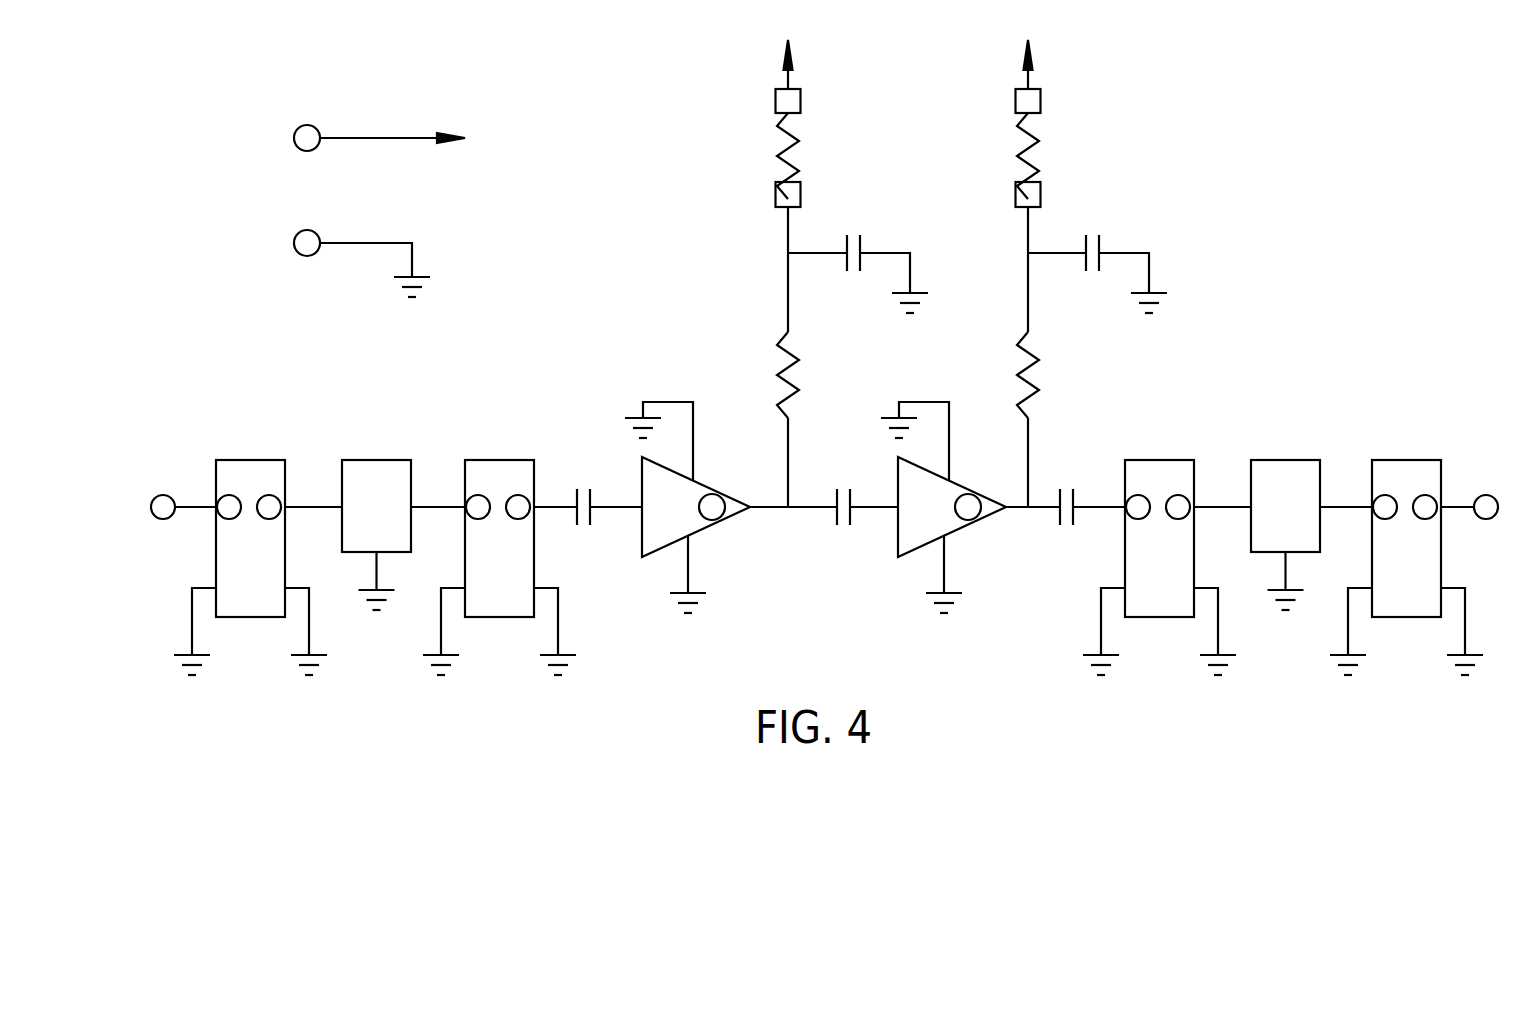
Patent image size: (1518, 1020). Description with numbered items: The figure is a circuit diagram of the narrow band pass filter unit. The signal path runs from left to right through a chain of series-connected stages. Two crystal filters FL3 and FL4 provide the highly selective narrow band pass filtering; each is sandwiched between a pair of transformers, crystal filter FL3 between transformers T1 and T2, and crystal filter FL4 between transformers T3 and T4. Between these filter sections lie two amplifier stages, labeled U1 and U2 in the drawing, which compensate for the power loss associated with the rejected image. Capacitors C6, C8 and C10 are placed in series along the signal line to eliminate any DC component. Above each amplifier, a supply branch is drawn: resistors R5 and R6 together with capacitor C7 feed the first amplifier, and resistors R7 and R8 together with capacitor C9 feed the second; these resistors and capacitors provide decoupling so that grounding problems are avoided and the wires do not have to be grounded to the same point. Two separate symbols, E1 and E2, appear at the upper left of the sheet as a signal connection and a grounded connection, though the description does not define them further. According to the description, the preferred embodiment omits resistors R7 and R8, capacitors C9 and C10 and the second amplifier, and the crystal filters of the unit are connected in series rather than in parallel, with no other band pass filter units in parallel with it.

The signal input port E1 is at (379, 120).
The ground port E2 is at (362, 244).
The transformer T1 is at (250, 546).
The crystal filter FL3 is at (376, 513).
The transformer T2 is at (499, 546).
The capacitor C6 is at (583, 488).
The amplifier U1 is at (679, 507).
The resistor R5 is at (764, 123).
The resistor R6 is at (763, 375).
The capacitor C7 is at (858, 257).
The capacitor C8 is at (849, 488).
The amplifier U2 is at (938, 507).
The resistor R7 is at (1007, 123).
The resistor R8 is at (1006, 375).
The capacitor C9 is at (1097, 257).
The capacitor C10 is at (1067, 488).
The transformer T3 is at (1159, 546).
The crystal filter FL4 is at (1285, 513).
The transformer T4 is at (1406, 546).